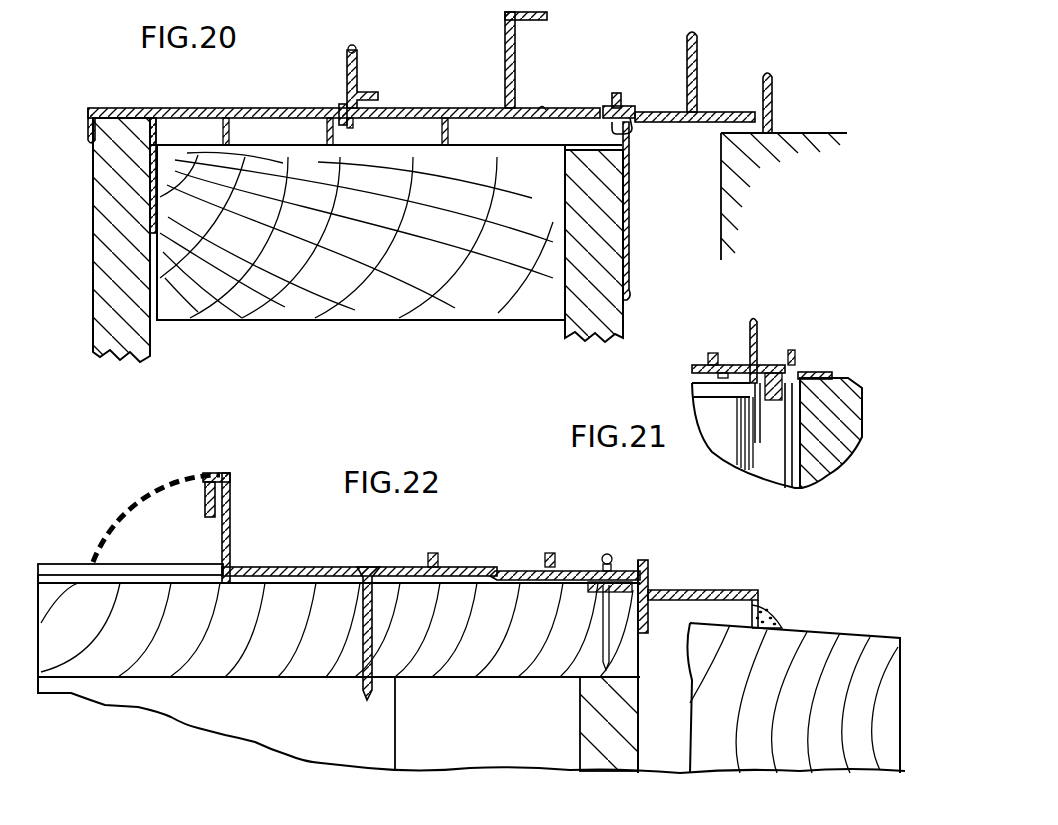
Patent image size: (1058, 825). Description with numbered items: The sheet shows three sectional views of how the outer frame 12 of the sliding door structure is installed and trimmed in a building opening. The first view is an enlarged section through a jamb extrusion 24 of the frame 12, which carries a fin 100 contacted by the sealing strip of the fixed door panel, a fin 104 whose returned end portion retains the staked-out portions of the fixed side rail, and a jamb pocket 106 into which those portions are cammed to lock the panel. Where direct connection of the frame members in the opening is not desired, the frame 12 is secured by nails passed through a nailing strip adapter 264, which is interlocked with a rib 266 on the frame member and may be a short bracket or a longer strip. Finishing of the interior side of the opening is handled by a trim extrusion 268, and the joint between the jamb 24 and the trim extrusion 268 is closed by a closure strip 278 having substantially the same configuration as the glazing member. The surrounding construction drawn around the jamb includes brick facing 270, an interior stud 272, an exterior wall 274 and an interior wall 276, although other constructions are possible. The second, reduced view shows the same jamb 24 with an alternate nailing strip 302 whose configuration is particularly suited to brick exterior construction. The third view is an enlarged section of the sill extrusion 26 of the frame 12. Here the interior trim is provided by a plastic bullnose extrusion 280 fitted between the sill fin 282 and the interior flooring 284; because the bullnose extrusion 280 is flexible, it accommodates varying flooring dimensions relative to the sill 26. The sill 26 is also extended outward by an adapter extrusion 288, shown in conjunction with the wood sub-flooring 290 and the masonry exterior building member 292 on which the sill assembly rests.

In FIG. 20, the outer frame 12 is at (358, 62).
In FIG. 22, the outer frame 12 is at (465, 567).
In FIG. 20, the jamb extrusion 24 is at (505, 45).
In FIG. 21, the jamb extrusion 24 is at (758, 330).
In FIG. 22, the sill extrusion 26 is at (365, 565).
In FIG. 20, the fin 100 is at (697, 72).
In FIG. 20, the fin 104 is at (516, 80).
In FIG. 20, the jamb pocket 106 is at (549, 116).
In FIG. 20, the nailing strip adapter 264 is at (630, 196).
In FIG. 20, the rib 266 is at (637, 130).
In FIG. 20, the trim extrusion 268 is at (210, 108).
In FIG. 20, the brick facing 270 is at (780, 133).
In FIG. 20, the interior stud 272 is at (308, 322).
In FIG. 20, the exterior wall 274 is at (562, 330).
In FIG. 20, the interior wall 276 is at (153, 336).
In FIG. 20, the closure strip 278 is at (344, 106).
In FIG. 22, the plastic bullnose extrusion 280 is at (155, 493).
In FIG. 22, the sill fin 282 is at (231, 520).
In FIG. 22, the interior flooring 284 is at (75, 564).
In FIG. 22, the adapter extrusion 288 is at (712, 590).
In FIG. 22, the wood sub-flooring 290 is at (470, 678).
In FIG. 22, the masonry exterior building member 292 is at (800, 632).
In FIG. 21, the alternate nailing strip 302 is at (817, 372).